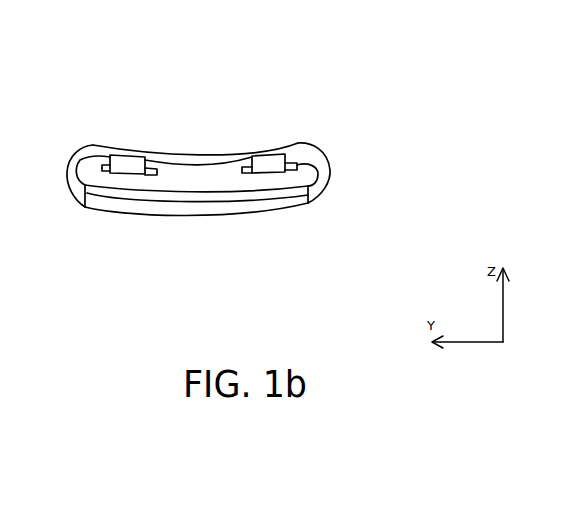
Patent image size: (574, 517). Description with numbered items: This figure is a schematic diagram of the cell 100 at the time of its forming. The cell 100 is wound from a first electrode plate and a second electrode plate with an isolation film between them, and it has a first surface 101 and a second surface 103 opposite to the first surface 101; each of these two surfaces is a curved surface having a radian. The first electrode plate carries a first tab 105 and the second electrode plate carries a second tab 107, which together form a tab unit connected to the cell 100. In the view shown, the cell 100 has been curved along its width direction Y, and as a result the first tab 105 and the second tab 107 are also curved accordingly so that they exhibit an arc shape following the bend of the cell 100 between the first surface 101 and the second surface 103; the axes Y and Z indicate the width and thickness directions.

The cell 100 is at (235, 28).
The first surface 101 is at (213, 218).
The second surface 103 is at (188, 153).
The first tab 105 is at (120, 153).
The second tab 107 is at (276, 150).